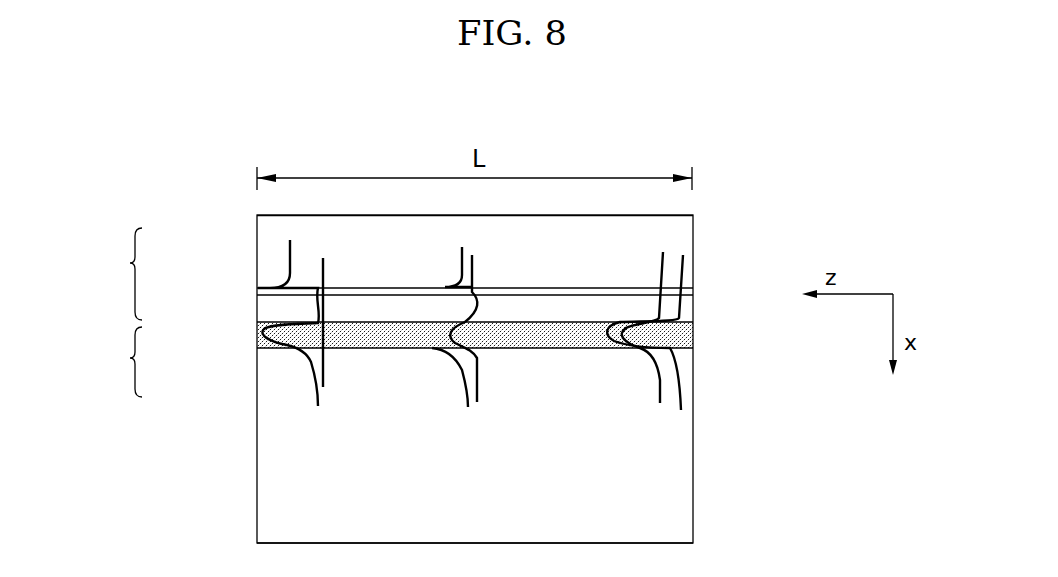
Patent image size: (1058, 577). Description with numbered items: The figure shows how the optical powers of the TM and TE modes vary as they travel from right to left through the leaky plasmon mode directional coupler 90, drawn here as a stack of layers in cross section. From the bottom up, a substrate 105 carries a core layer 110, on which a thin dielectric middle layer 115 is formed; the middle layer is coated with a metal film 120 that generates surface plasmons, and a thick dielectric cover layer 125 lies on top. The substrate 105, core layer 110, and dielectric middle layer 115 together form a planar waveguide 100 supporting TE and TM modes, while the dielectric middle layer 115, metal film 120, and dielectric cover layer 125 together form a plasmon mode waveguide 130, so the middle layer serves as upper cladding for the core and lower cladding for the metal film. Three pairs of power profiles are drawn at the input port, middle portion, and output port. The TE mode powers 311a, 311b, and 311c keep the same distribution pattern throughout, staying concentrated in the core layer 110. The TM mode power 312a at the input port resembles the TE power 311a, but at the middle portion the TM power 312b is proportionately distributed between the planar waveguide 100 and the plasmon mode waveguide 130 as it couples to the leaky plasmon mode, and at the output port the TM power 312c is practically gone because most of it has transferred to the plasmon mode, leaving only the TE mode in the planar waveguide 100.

The leaky plasmon mode directional coupler 90 is at (506, 311).
The plasmon mode waveguide 130 is at (112, 274).
The planar waveguide 100 is at (112, 362).
The dielectric cover layer 125 is at (257, 240).
The metal film 120 is at (257, 289).
The dielectric middle layer 115 is at (257, 310).
The core layer 110 is at (257, 338).
The substrate 105 is at (257, 400).
The optical power of the TE mode at the input port 311a is at (686, 378).
The optical power of the TE mode at the middle portion 311b is at (463, 390).
The optical power of the TE mode at the output port 311c is at (312, 392).
The optical power of the TM mode at the input port 312a is at (658, 393).
The optical power of the TM mode at the middle portion 312b is at (478, 372).
The optical power of the TM mode at the output port 312c is at (323, 367).